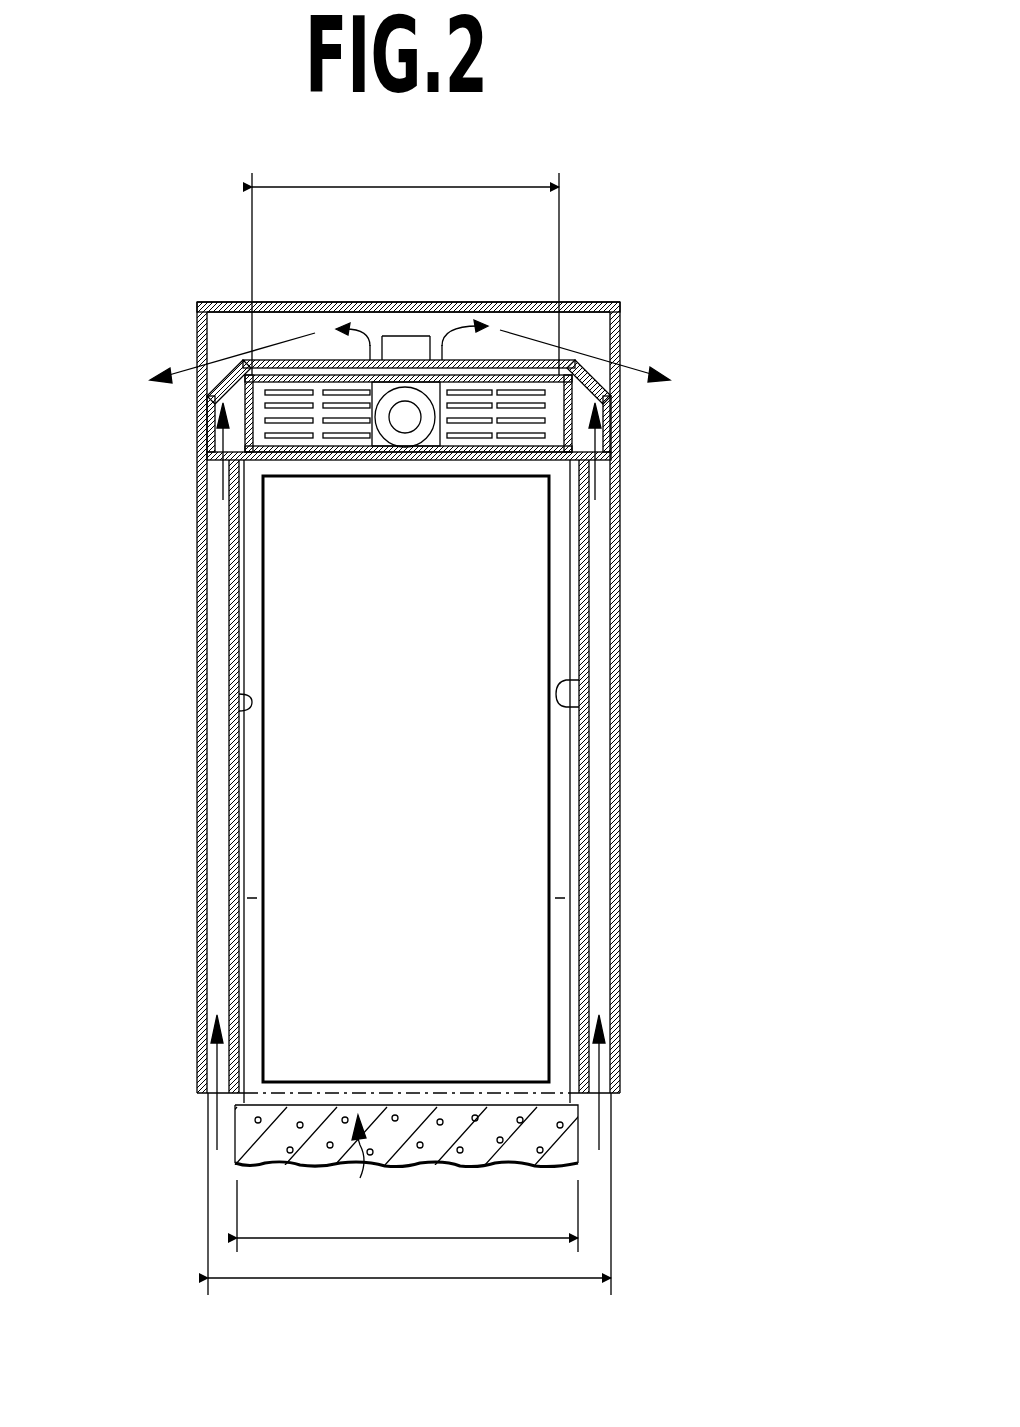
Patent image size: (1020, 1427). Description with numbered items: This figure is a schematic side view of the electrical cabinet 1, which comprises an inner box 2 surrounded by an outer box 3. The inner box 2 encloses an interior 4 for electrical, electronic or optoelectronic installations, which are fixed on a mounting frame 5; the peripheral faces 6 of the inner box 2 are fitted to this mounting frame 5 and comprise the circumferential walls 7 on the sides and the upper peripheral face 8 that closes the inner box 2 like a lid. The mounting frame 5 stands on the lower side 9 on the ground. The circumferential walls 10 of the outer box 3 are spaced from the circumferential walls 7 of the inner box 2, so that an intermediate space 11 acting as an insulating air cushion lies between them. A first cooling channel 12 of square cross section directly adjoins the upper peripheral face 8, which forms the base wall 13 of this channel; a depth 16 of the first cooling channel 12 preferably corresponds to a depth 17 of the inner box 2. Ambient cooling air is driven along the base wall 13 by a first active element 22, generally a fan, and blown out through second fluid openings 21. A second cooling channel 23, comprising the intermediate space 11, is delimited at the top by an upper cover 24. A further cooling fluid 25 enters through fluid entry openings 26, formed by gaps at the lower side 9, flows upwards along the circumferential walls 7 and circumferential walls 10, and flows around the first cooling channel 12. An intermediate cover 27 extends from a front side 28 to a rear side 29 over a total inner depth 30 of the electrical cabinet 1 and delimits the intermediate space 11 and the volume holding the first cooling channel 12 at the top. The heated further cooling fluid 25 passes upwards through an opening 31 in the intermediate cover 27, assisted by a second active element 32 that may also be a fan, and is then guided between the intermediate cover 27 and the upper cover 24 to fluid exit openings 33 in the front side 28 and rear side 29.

The electrical cabinet 1 is at (648, 258).
The inner box 2 is at (232, 798).
The outer box 3 is at (198, 907).
The interior 4 is at (487, 797).
The mounting frame 5 is at (253, 920).
The peripheral faces 6 is at (239, 710).
The circumferential walls 7 is at (229, 597).
The upper peripheral face 8 is at (473, 428).
The lower side 9 is at (360, 1178).
The circumferential walls 10 is at (197, 752).
The intermediate space 11 is at (226, 857).
The first cooling channel 12 is at (238, 355).
The base wall 13 is at (340, 440).
The depth 16 is at (400, 185).
The depth 17 is at (456, 1237).
The second fluid openings 21 is at (283, 436).
The first active element 22 is at (408, 440).
The second cooling channel 23 is at (283, 325).
The upper cover 24 is at (485, 303).
The further cooling fluid 25 is at (192, 362).
The fluid entry openings 26 is at (208, 1098).
The intermediate cover 27 is at (582, 303).
The front side 28 is at (615, 652).
The rear side 29 is at (198, 657).
The total inner depth 30 is at (455, 1283).
The opening 31 is at (383, 337).
The second active element 32 is at (410, 343).
The fluid exit openings 33 is at (197, 378).